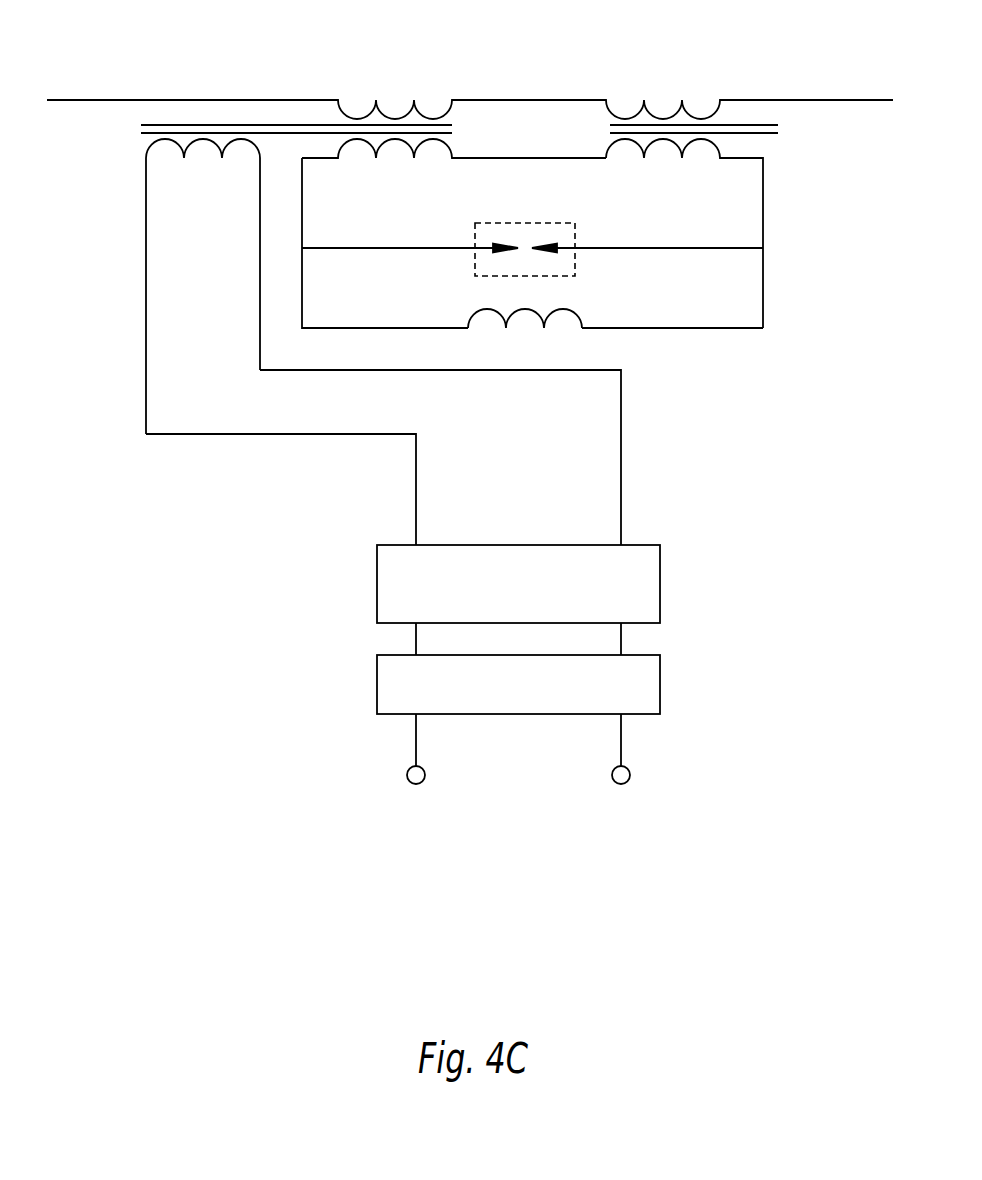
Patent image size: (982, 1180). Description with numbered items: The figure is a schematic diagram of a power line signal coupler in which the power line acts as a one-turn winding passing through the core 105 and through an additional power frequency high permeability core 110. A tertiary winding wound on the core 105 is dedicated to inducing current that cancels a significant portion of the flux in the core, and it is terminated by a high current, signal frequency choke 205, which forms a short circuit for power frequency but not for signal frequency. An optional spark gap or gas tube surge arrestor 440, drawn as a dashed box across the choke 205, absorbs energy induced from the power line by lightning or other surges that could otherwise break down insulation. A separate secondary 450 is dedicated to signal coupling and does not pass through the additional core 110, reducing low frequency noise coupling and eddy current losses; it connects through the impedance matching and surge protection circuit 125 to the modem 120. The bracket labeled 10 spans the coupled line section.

The telephone line system 10 is at (653, 76).
The core 105 is at (453, 127).
The additional power frequency high permeability core 110 is at (778, 127).
The spark gap or gas tube surge arrestor 440 is at (575, 241).
The high current, signal frequency choke 205 is at (582, 314).
The secondary 450 is at (200, 147).
The impedance matching and surge protection circuit 125 is at (661, 584).
The modem 120 is at (661, 687).